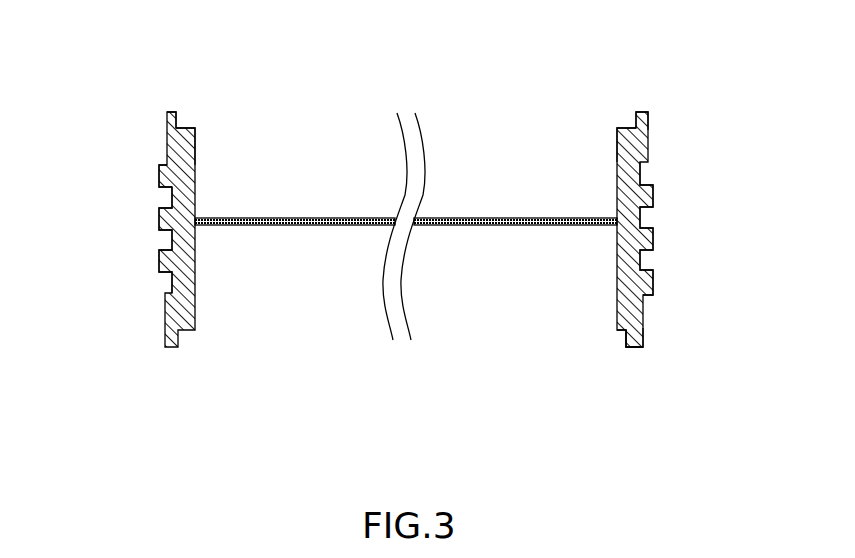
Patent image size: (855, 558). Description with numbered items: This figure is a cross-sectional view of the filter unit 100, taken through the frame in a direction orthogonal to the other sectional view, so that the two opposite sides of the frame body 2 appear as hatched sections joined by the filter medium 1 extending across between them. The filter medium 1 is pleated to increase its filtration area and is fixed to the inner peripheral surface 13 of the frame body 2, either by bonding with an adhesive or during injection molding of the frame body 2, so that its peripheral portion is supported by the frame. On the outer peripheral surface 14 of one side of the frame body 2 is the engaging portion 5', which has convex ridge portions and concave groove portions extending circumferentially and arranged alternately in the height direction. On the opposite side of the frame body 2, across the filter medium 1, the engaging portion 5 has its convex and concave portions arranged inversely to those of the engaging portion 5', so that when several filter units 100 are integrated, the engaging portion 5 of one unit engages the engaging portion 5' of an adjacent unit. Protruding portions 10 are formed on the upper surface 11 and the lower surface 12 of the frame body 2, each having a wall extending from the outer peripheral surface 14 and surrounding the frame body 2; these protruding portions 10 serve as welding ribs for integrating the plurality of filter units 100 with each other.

The filter unit 100 is at (165, 28).
The filter medium 1 is at (500, 218).
The frame body 2 is at (690, 156).
The engaging portion 5 is at (669, 231).
The engaging portion 5' is at (141, 234).
The protruding portion 10 is at (645, 118).
The upper surface 11 is at (626, 123).
The lower surface 12 is at (626, 334).
The inner peripheral surface 13 is at (196, 140).
The outer peripheral surface 14 is at (167, 128).